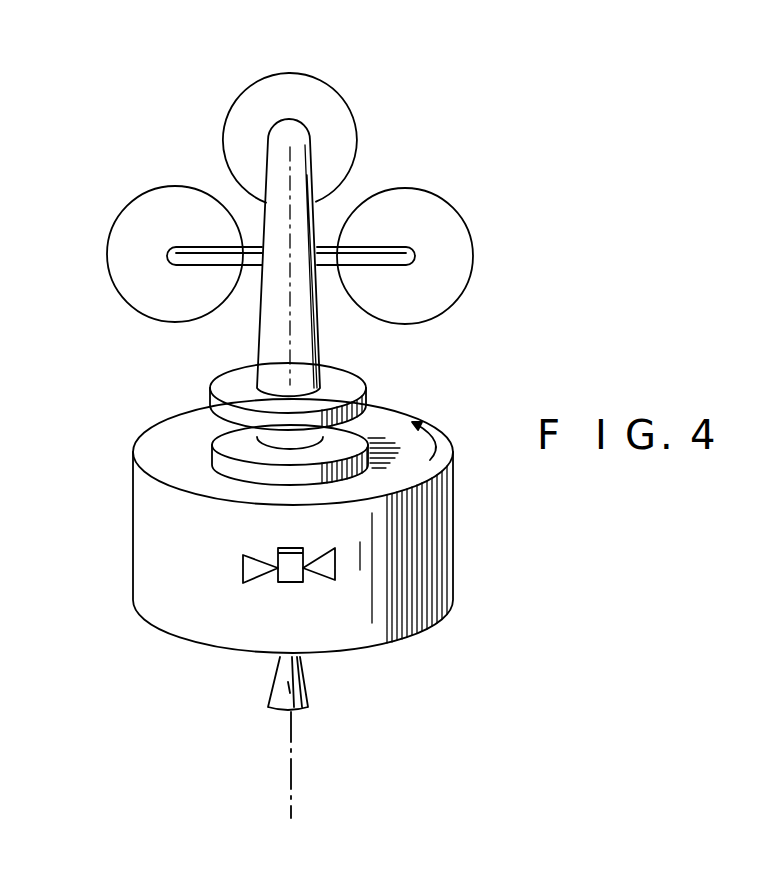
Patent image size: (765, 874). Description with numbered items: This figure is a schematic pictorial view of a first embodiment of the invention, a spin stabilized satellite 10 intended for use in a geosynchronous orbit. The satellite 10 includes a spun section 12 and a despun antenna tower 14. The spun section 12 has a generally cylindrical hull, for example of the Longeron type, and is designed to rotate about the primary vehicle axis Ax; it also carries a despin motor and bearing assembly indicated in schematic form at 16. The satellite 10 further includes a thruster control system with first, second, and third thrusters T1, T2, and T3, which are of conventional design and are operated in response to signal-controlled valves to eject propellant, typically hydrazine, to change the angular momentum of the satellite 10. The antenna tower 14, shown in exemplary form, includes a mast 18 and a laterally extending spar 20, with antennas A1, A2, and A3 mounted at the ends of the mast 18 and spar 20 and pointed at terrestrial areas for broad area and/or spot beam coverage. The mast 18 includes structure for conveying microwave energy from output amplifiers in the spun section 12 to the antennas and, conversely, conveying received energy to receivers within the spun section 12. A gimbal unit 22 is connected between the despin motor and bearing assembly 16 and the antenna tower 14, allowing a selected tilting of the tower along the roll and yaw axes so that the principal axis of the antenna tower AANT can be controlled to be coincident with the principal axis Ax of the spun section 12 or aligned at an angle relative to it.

The satellite 10 is at (480, 170).
The spun section 12 is at (449, 532).
The despun antenna tower 14 is at (365, 180).
The despin motor and bearing assembly 16 is at (213, 457).
The mast 18 is at (273, 342).
The spar 20 is at (329, 266).
The gimbal unit 22 is at (362, 380).
The antenna A1 is at (107, 258).
The antenna A2 is at (302, 87).
The antenna A3 is at (466, 280).
The principal axis of the antenna tower AANT is at (289, 163).
The first thruster T1 is at (255, 572).
The second thruster T2 is at (328, 567).
The third thruster T3 is at (306, 690).
The primary vehicle axis Ax is at (292, 795).